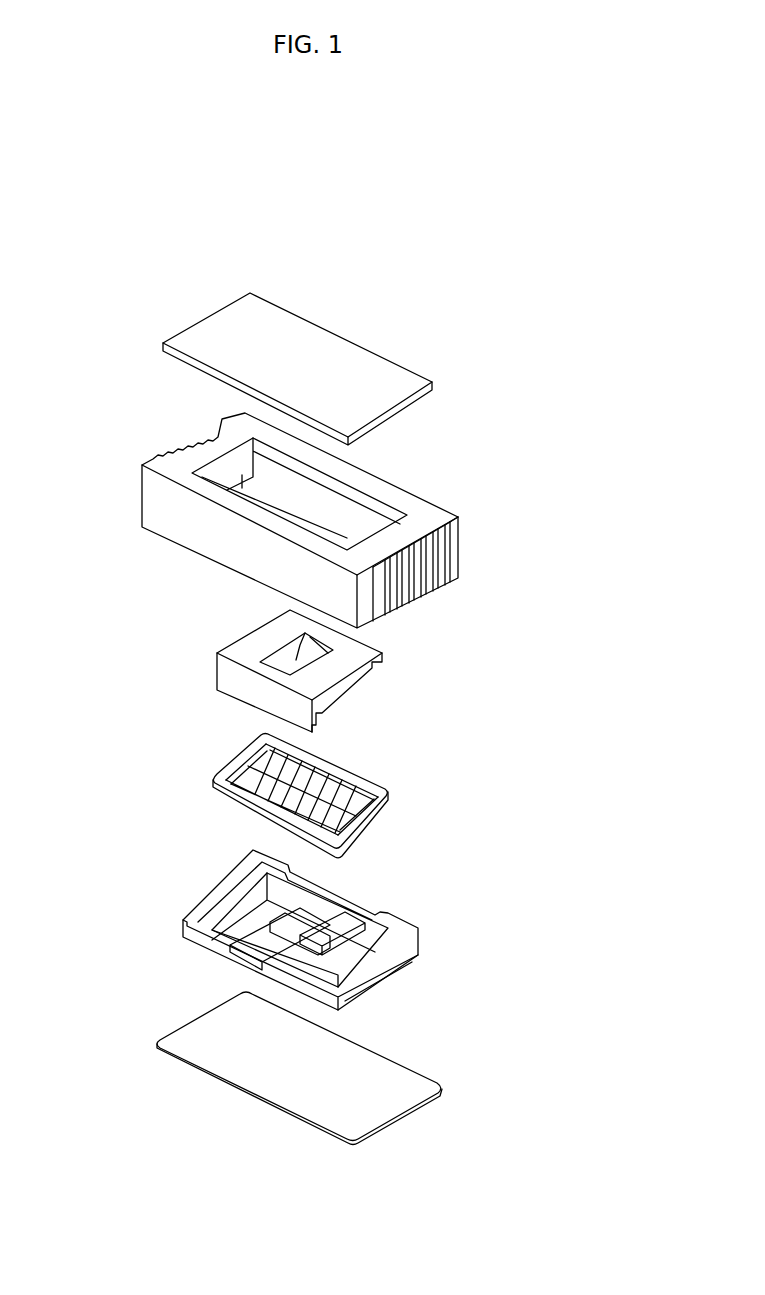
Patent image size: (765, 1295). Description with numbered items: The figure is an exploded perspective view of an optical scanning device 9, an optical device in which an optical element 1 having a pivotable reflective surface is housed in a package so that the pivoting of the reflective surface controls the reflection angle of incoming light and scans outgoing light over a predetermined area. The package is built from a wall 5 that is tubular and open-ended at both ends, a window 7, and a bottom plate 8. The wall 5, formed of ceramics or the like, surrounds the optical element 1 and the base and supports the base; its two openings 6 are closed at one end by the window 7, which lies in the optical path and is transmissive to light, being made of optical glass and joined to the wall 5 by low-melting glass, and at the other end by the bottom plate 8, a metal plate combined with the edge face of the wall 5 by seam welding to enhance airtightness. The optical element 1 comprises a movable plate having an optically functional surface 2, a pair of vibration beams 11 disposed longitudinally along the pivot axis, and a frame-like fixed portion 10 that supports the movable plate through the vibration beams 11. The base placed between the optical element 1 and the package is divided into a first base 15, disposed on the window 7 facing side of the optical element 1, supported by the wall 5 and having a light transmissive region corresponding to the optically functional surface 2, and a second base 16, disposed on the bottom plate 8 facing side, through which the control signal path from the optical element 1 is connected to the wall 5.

The optical element 1 is at (238, 747).
The optically functional surface 2 is at (313, 768).
The wall 5 is at (197, 530).
The openings 6 is at (258, 478).
The window 7 is at (240, 335).
The bottom plate 8 is at (247, 1065).
The optical scanning device 9 is at (440, 287).
The fixed portion 10 is at (228, 797).
The vibration beams 11 is at (240, 793).
The first base 15 is at (240, 650).
The second base 16 is at (215, 893).